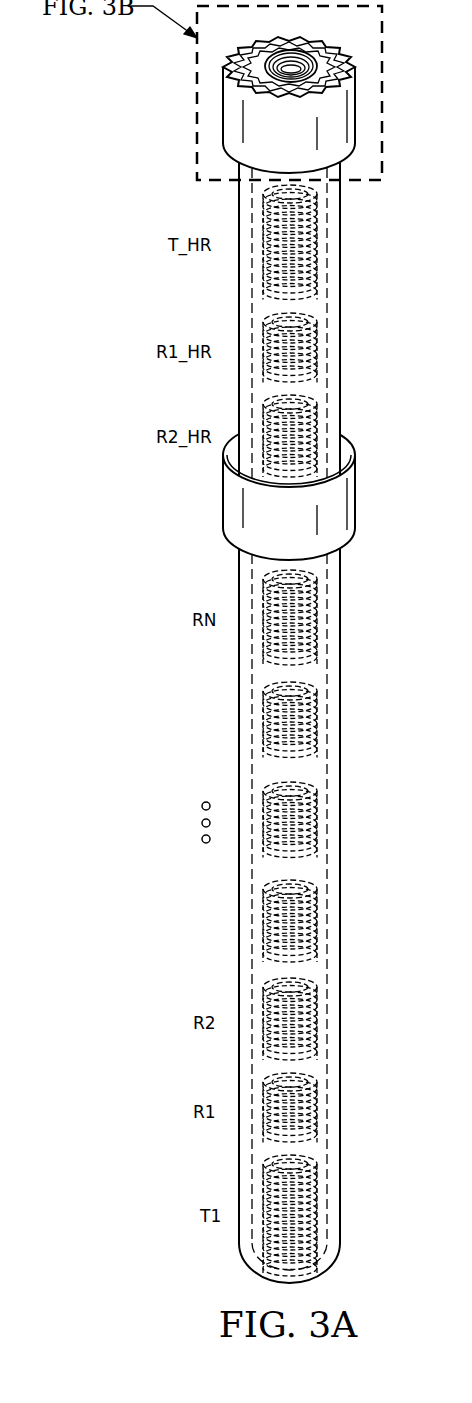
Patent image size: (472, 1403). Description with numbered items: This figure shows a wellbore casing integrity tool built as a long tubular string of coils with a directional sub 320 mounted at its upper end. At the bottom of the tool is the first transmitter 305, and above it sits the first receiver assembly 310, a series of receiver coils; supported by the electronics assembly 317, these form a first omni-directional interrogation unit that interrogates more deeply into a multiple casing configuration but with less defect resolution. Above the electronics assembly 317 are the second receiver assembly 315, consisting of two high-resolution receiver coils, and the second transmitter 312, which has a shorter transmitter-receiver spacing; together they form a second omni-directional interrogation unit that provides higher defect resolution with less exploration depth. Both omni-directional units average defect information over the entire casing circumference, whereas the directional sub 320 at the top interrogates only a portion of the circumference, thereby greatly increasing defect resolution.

The first transmitter (T1) 305 is at (317, 1205).
The first receiver assembly (R1, . . . , RN) 310 is at (127, 594).
The second transmitter (T_HR) 312 is at (317, 252).
The second receiver assembly (R1_HR, R2_HR) 315 is at (127, 316).
The electronics assembly 317 is at (223, 490).
The directional sub 320 is at (222, 106).